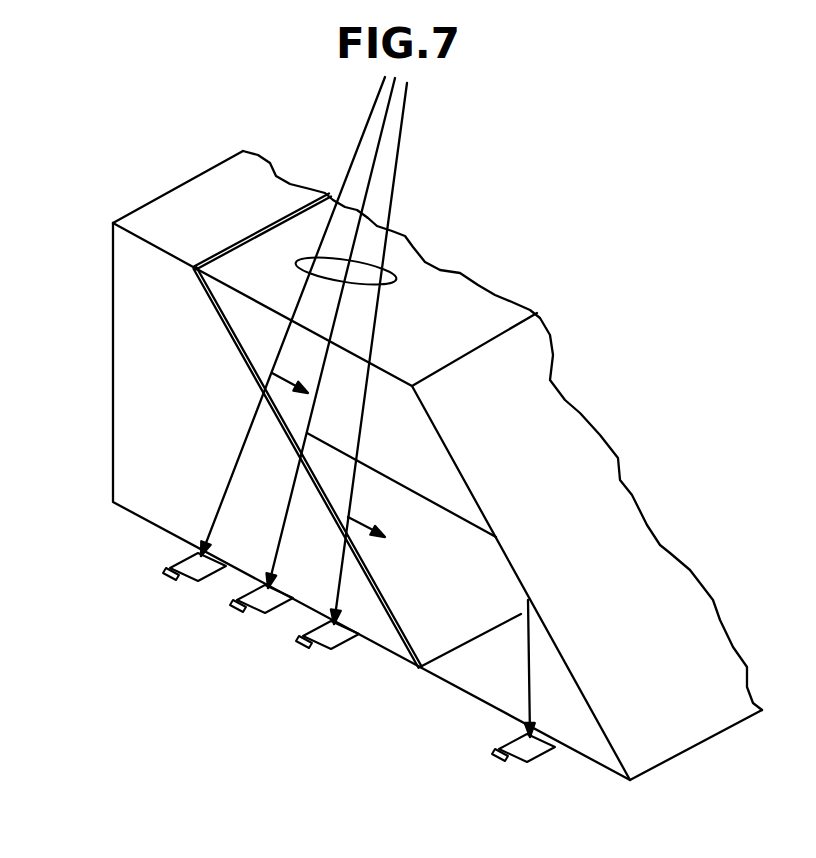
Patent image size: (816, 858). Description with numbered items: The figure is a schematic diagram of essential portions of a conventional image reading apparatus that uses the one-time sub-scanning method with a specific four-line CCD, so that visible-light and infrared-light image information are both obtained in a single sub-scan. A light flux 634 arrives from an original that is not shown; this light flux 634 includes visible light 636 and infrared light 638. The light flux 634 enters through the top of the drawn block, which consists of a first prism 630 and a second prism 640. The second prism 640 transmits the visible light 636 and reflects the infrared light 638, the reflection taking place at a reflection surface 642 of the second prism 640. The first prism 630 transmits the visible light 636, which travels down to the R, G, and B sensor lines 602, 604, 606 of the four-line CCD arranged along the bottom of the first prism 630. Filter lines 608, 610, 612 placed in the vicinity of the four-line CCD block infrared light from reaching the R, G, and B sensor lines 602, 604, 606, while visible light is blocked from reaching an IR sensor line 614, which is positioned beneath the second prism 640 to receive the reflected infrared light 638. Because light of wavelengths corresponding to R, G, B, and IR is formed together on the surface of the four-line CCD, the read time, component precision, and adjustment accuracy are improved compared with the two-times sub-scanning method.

The R sensor line 602 is at (170, 577).
The G sensor line 604 is at (237, 613).
The B sensor line 606 is at (300, 652).
The filter line 608 is at (178, 557).
The filter line 610 is at (267, 605).
The filter line 612 is at (341, 650).
The IR sensor line 614 is at (507, 753).
The first prism 630 is at (153, 462).
The light flux 634 is at (365, 262).
The visible light 636 is at (283, 523).
The infrared light 638 is at (397, 478).
The second prism 640 is at (590, 737).
The reflection surface 642 is at (581, 543).